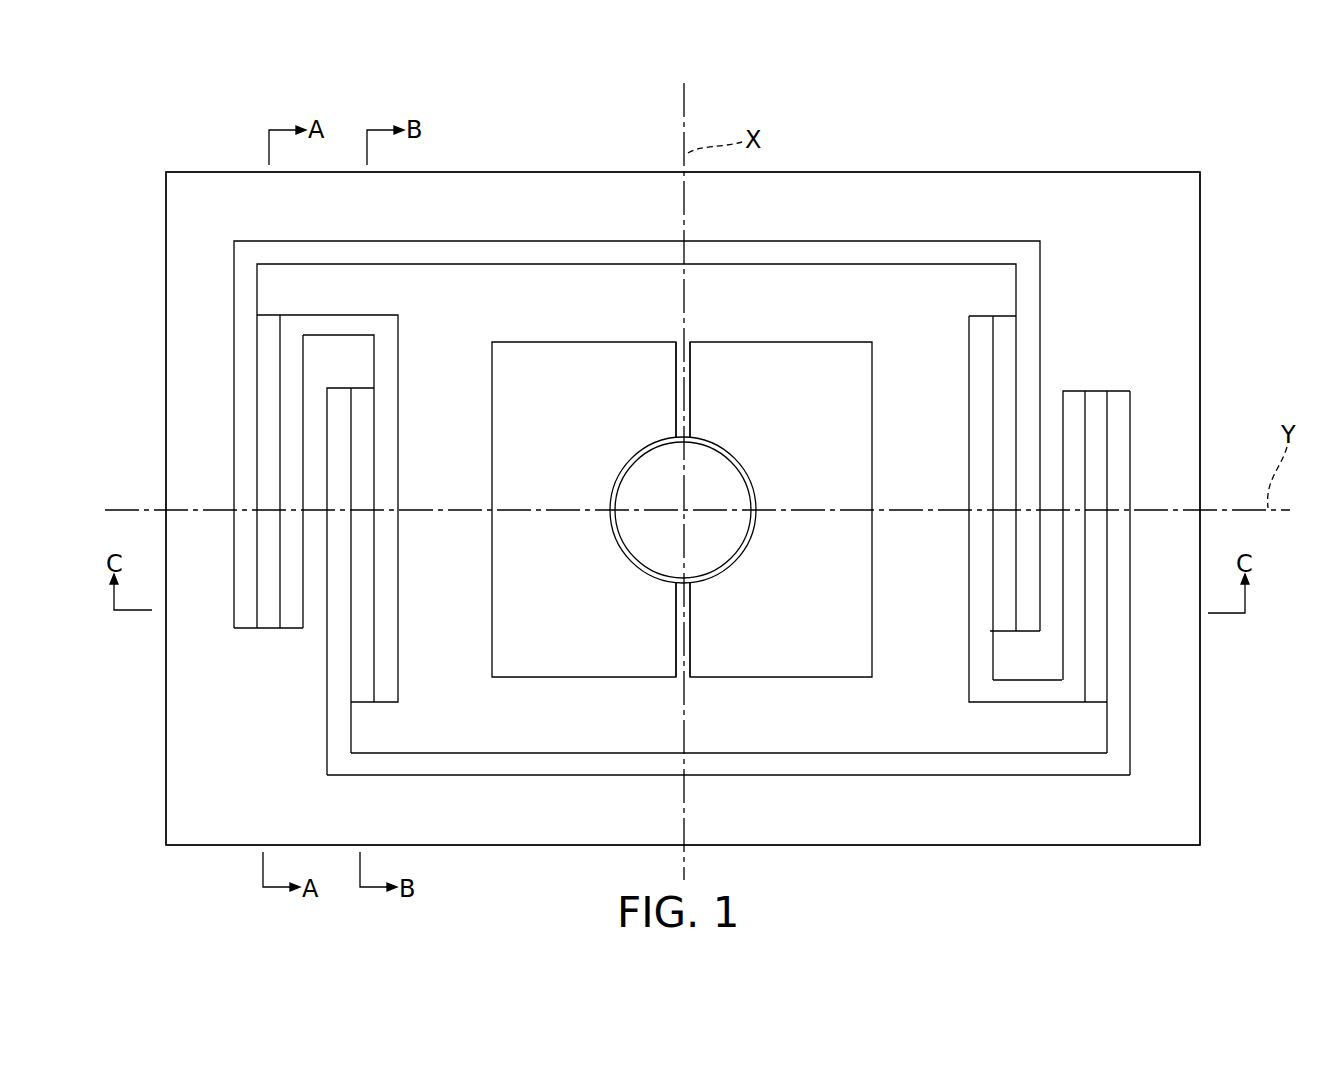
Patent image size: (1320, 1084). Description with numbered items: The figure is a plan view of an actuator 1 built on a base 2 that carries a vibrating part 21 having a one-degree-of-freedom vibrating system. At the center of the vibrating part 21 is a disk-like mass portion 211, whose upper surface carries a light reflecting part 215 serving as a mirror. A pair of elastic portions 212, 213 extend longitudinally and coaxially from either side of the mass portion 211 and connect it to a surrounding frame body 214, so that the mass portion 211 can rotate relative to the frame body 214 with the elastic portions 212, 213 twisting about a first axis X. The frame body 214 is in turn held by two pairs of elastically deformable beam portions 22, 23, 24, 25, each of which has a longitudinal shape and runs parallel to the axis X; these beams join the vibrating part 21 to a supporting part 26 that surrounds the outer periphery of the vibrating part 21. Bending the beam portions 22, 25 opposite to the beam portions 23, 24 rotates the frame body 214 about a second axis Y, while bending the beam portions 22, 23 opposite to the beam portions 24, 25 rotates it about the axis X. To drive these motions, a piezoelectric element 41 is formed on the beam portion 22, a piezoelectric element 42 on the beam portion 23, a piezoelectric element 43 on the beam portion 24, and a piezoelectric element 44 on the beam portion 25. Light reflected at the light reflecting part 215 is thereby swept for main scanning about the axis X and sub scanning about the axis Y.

The actuator 1 is at (1138, 148).
The base 2 is at (1202, 285).
The vibrating part 21 is at (1055, 130).
The mass portion 211 is at (727, 448).
The elastic portion 212 is at (685, 395).
The elastic portion 213 is at (685, 630).
The frame body 214 is at (933, 287).
The light reflecting part 215 is at (642, 478).
The beam portion 22 is at (360, 643).
The beam portion 23 is at (268, 423).
The beam portion 24 is at (1096, 558).
The beam portion 25 is at (1000, 432).
The supporting part 26 is at (1178, 368).
The piezoelectric element 41 is at (360, 593).
The piezoelectric element 42 is at (268, 360).
The piezoelectric element 43 is at (1095, 651).
The piezoelectric element 44 is at (1000, 468).